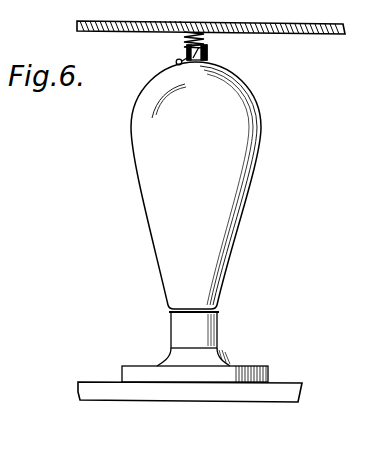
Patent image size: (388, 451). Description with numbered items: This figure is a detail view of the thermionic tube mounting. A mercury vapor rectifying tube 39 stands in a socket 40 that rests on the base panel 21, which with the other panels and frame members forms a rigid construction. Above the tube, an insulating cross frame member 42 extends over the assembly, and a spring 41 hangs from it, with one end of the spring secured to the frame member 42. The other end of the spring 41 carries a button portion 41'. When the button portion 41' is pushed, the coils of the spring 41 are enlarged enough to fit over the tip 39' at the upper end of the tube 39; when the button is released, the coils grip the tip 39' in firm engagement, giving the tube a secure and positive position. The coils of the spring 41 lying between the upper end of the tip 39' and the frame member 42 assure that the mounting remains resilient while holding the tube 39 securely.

The base panel 21 is at (140, 393).
The mercury vapor rectifying tube 39 is at (220, 185).
The tip 39' is at (220, 49).
The socket 40 is at (141, 370).
The spring 41 is at (158, 46).
The button portion 41' is at (143, 72).
The cross frame member 42 is at (290, 34).